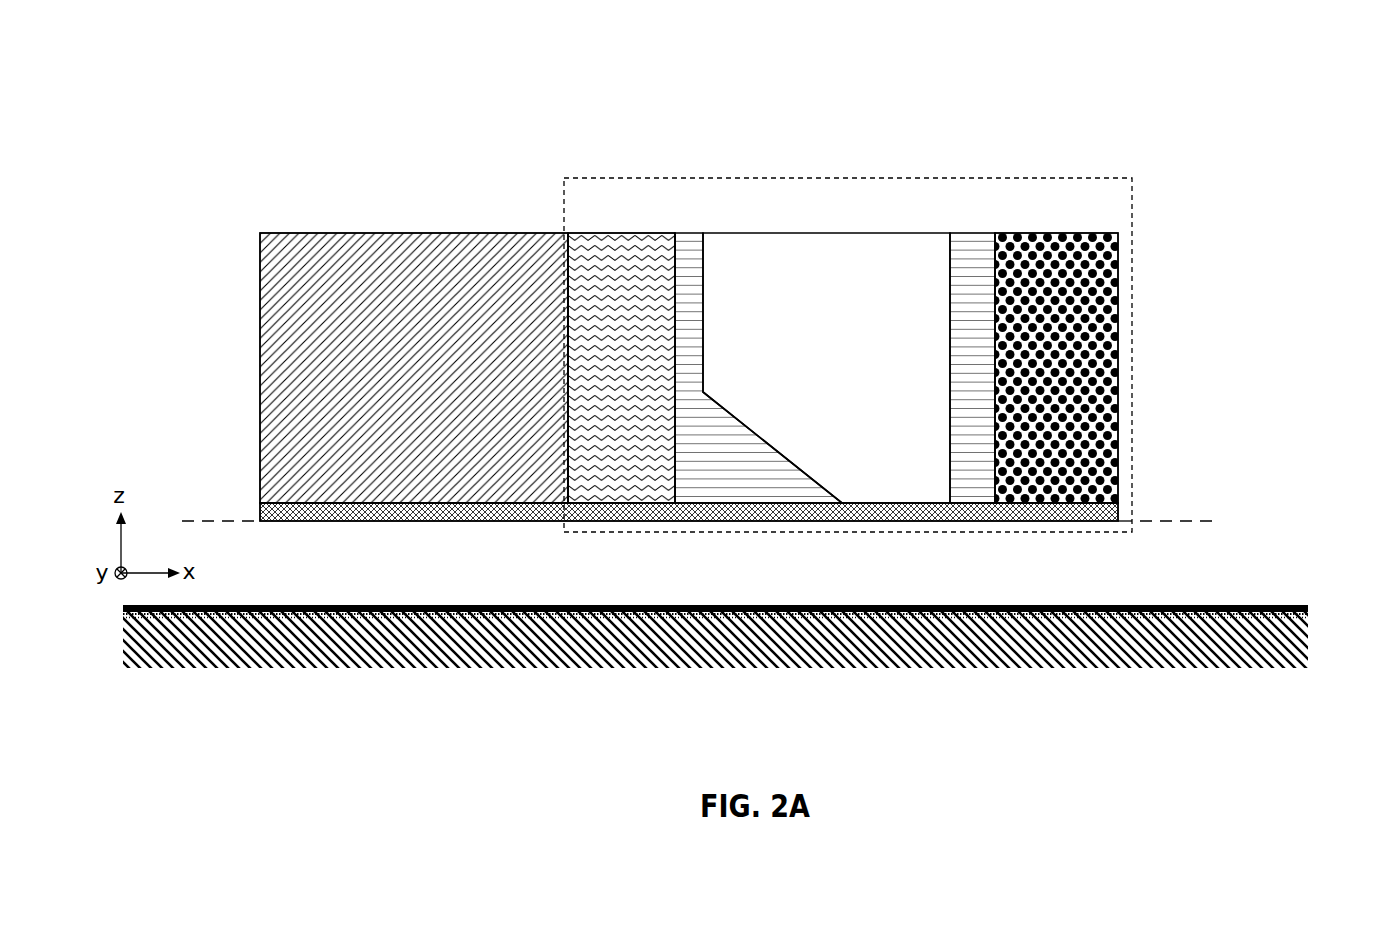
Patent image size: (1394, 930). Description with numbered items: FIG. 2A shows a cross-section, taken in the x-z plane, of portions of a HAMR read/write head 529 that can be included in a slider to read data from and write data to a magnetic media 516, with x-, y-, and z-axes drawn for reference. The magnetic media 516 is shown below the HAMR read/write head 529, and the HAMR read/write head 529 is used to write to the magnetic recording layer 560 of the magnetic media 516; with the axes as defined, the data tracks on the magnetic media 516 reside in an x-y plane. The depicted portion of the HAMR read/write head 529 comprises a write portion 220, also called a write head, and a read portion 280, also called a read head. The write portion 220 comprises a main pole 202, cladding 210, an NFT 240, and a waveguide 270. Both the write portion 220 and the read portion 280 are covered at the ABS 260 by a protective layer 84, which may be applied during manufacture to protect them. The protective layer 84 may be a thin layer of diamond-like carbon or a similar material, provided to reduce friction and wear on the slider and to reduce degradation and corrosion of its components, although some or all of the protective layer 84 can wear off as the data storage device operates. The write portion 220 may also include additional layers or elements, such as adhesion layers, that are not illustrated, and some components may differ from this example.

The HAMR read/write head 529 is at (660, 271).
The write portion 220 is at (827, 178).
The cladding 210 is at (979, 233).
The read portion 280 is at (391, 376).
The waveguide 270 is at (598, 376).
The NFT 240 is at (833, 376).
The main pole 202 is at (1036, 376).
The protective layer 84 is at (258, 519).
The ABS 260 is at (1177, 522).
The magnetic recording layer 560 is at (1280, 605).
The magnetic media 516 is at (748, 655).